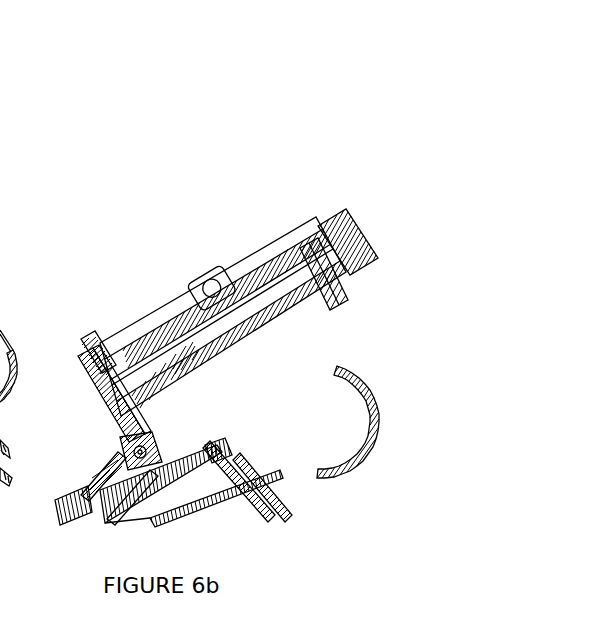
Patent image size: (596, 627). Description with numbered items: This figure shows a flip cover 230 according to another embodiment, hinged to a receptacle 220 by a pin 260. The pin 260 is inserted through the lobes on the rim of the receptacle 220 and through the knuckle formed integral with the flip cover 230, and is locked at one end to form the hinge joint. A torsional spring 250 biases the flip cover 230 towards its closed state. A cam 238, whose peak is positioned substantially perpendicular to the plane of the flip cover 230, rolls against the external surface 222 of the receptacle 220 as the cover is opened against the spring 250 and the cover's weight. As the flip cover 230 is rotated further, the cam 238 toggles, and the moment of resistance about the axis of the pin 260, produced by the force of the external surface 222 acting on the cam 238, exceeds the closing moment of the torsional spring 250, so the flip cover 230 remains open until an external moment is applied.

The receptacle 220 is at (205, 508).
The external surface of the receptacle 222 is at (210, 443).
The flip cover 230 is at (294, 230).
The cam 238 is at (158, 452).
The torsional spring 250 is at (87, 514).
The pin 260 is at (140, 447).